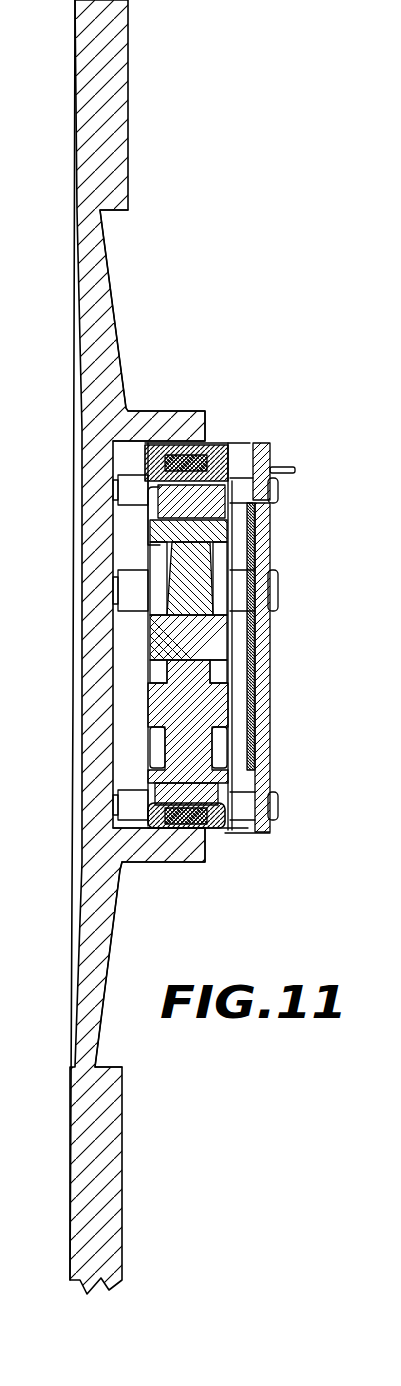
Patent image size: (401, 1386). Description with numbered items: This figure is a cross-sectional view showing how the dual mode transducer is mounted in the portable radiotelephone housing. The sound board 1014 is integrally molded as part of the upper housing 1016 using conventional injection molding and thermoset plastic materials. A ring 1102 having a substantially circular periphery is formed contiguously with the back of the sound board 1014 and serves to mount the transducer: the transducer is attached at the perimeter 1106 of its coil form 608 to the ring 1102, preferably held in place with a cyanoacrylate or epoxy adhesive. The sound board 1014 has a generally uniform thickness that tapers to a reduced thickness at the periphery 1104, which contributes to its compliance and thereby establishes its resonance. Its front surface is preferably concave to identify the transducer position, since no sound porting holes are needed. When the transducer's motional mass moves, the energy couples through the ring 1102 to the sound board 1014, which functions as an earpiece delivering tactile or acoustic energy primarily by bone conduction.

The upper housing 1016 is at (75, 77).
The sound board 1014 is at (73, 758).
The periphery 1104 is at (112, 247).
The ring 1102 is at (160, 408).
The coil form 608 is at (222, 444).
The perimeter 1106 is at (207, 832).